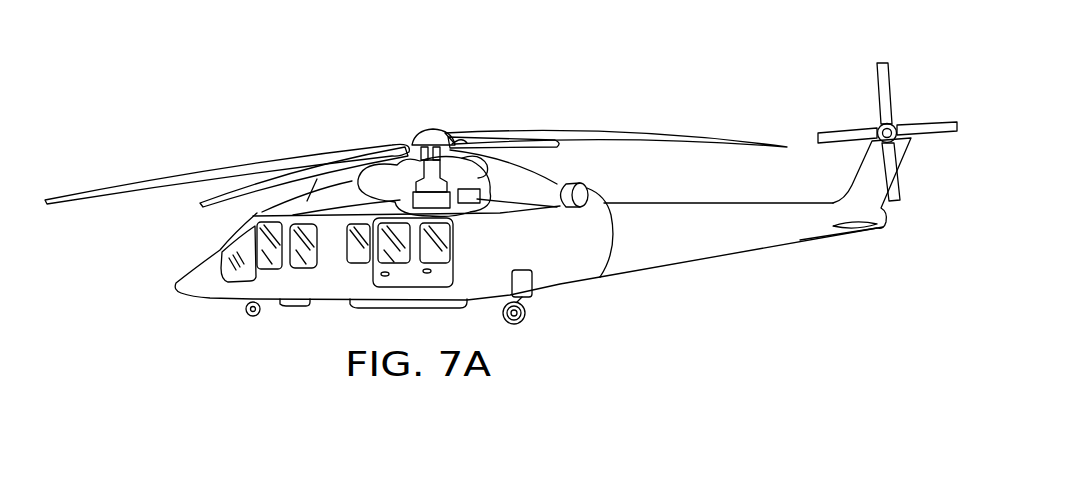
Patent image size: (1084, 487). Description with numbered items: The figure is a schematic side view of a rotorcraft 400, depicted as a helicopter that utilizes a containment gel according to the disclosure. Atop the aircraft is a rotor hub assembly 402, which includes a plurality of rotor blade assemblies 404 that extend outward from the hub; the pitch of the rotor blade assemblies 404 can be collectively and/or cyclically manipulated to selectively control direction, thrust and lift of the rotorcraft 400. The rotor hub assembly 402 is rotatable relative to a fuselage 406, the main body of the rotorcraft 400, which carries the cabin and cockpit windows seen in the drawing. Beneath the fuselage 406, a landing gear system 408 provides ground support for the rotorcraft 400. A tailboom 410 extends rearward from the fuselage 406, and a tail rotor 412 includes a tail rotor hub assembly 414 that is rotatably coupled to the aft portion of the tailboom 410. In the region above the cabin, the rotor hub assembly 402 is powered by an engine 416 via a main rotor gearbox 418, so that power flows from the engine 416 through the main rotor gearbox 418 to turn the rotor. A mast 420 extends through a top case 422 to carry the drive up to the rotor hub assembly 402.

The rotorcraft 400 is at (568, 90).
The rotor hub assembly 402 is at (425, 138).
The rotor blade assemblies 404 is at (127, 178).
The fuselage 406 is at (205, 300).
The landing gear system 408 is at (250, 318).
The tailboom 410 is at (682, 202).
The tail rotor 412 is at (890, 78).
The tail rotor hub assembly 414 is at (900, 143).
The engine 416 is at (484, 194).
The main rotor gearbox 418 is at (437, 201).
The mast 420 is at (451, 146).
The top case 422 is at (392, 165).